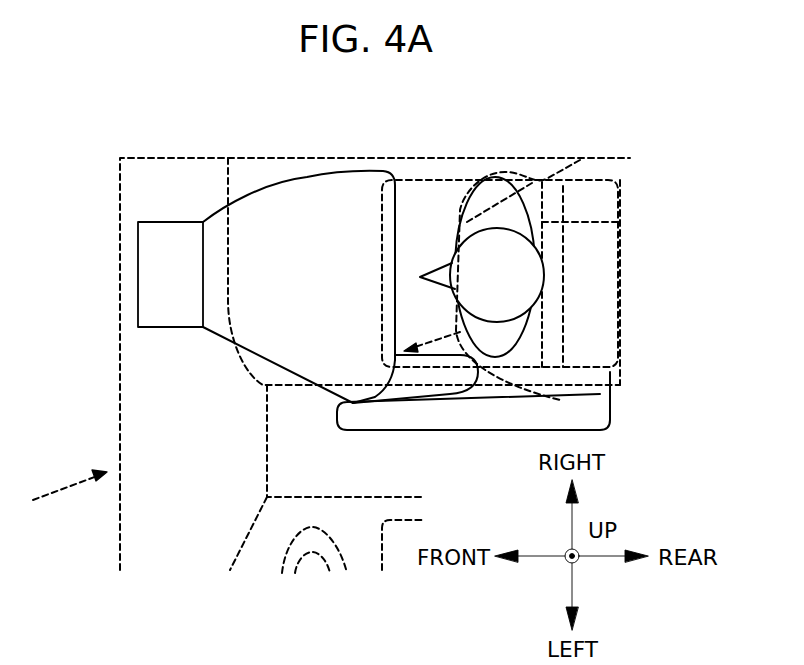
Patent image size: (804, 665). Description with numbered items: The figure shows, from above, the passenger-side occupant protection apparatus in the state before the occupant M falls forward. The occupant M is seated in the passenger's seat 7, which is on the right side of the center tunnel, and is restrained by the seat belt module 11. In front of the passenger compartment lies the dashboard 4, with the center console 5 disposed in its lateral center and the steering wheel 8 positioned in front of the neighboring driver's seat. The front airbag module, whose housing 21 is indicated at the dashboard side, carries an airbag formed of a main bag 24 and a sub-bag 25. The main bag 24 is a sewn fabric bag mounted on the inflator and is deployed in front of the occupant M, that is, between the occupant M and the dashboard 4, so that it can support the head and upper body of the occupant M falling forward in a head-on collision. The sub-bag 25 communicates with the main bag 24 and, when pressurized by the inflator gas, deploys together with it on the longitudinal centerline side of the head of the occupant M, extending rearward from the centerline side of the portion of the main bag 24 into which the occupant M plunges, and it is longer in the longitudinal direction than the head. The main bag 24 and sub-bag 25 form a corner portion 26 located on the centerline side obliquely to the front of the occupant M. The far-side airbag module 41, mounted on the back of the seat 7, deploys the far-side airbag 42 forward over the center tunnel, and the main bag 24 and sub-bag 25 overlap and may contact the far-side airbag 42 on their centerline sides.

The dashboard 4 is at (155, 358).
The center console 5 is at (248, 430).
The passenger's seat 7 is at (597, 205).
The steering wheel 8 is at (290, 540).
The seat belt module 11 is at (545, 168).
The housing 21 is at (180, 230).
The main bag 24 is at (308, 203).
The sub-bag 25 is at (440, 380).
The corner portion 26 is at (412, 372).
The far-side airbag module 41 is at (493, 412).
The far-side airbag 42 is at (541, 408).
The occupant M is at (500, 255).